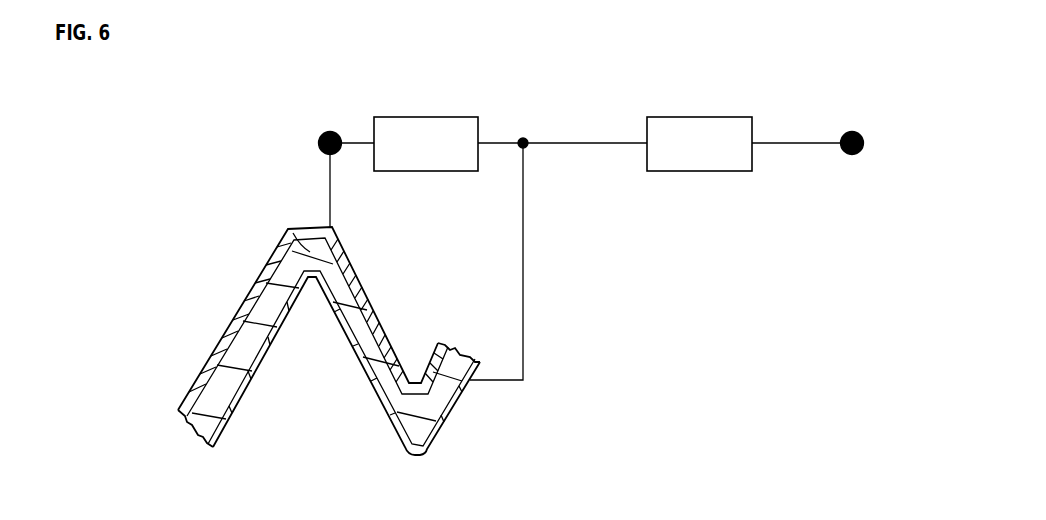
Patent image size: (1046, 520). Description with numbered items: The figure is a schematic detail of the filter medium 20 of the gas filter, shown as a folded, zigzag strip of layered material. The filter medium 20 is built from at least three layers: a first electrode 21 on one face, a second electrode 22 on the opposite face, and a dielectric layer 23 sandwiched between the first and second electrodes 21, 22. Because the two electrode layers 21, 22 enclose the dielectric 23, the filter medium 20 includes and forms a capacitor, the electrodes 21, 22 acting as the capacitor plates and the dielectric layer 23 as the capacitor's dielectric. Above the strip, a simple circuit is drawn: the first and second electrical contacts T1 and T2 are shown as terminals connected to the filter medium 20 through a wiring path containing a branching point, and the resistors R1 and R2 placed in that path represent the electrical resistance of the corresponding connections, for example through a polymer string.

The filter medium 20 is at (357, 340).
The first electrode 21 is at (457, 405).
The second electrode 22 is at (440, 343).
The dielectric layer 23 is at (453, 363).
The first electrical contact T1 is at (850, 119).
The second electrical contact T2 is at (340, 156).
The resistor R1 is at (510, 144).
The resistor R2 is at (744, 144).